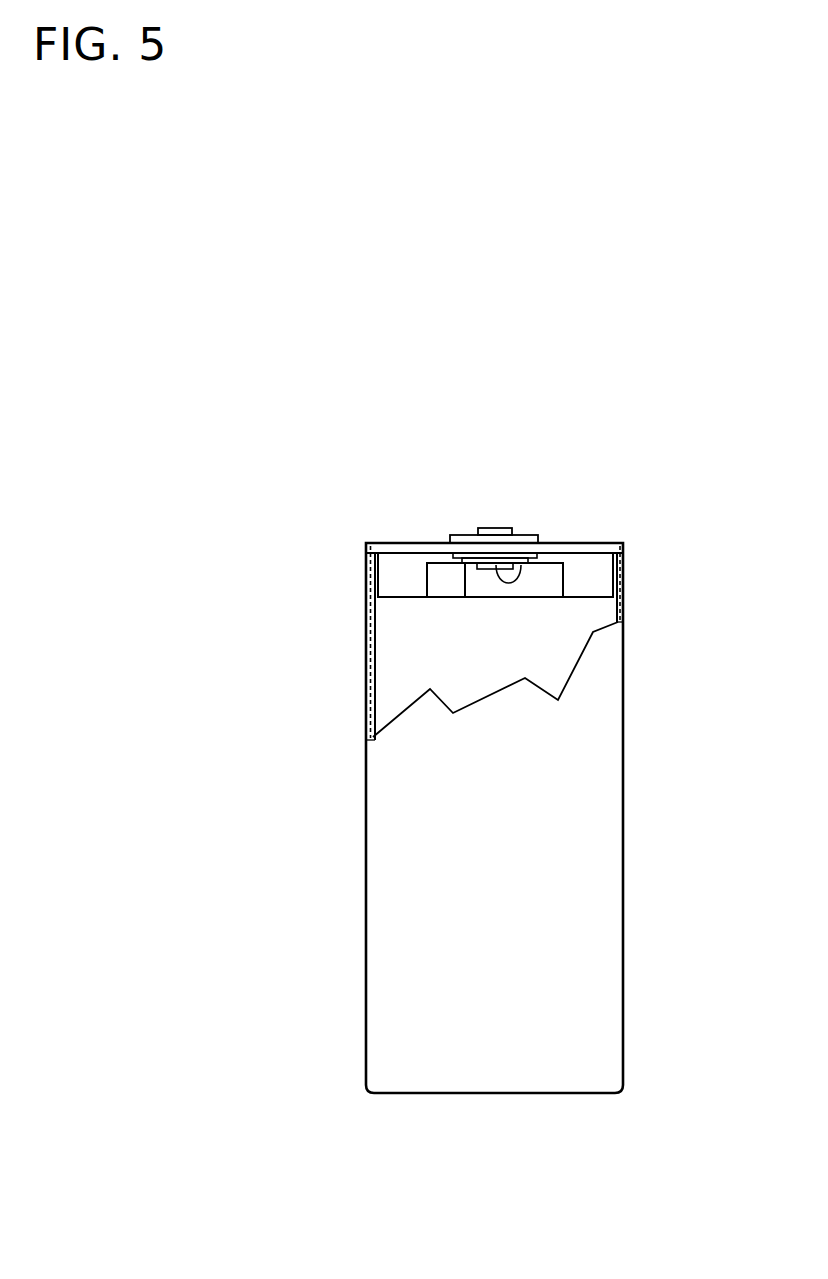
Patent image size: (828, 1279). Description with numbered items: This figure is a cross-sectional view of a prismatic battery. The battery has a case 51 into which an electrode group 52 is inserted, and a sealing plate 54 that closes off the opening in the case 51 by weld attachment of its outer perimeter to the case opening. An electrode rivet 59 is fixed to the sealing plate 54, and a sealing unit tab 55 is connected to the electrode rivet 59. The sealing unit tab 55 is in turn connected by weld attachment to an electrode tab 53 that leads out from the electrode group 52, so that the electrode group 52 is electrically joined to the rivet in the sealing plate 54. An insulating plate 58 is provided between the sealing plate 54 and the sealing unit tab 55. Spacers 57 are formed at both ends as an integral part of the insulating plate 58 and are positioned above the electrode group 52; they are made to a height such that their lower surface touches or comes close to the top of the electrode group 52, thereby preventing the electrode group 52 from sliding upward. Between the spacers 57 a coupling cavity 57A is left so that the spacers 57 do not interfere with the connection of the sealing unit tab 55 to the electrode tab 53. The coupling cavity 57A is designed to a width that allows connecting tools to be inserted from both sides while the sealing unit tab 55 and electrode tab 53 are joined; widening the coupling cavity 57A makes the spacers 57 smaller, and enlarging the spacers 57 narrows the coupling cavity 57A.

The case 51 is at (626, 578).
The electrode group 52 is at (488, 669).
The electrode tab 53 is at (437, 592).
The sealing plate 54 is at (402, 551).
The sealing unit tab 55 is at (388, 575).
The spacers 57 is at (368, 588).
The coupling cavity 57A is at (532, 587).
The insulating plate 58 is at (436, 562).
The electrode rivet 59 is at (537, 561).